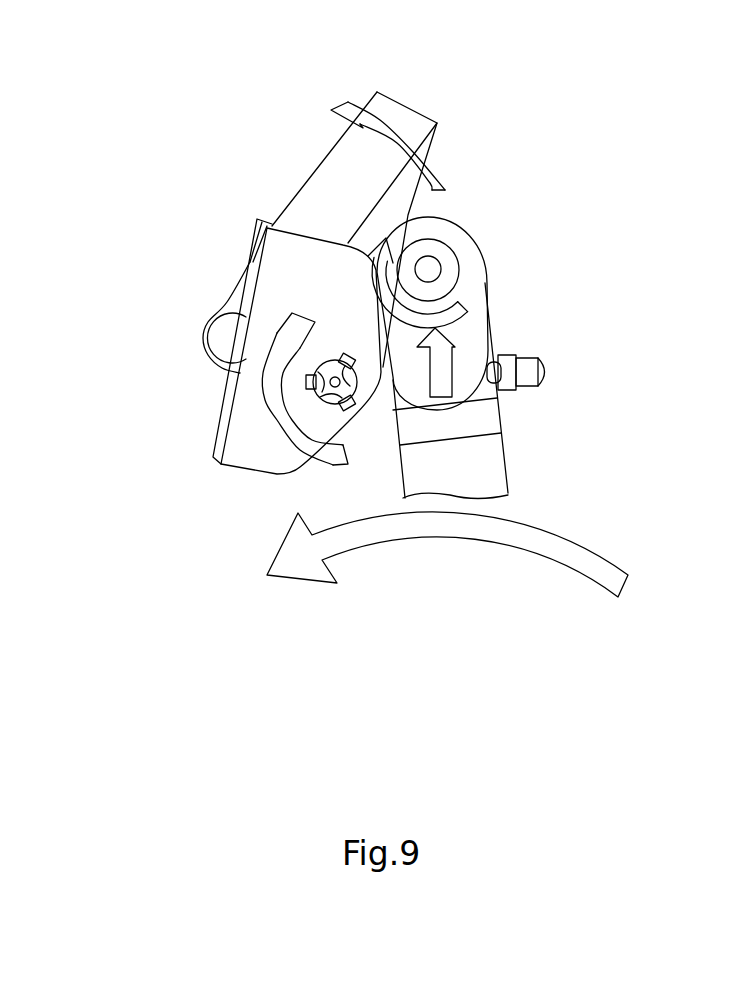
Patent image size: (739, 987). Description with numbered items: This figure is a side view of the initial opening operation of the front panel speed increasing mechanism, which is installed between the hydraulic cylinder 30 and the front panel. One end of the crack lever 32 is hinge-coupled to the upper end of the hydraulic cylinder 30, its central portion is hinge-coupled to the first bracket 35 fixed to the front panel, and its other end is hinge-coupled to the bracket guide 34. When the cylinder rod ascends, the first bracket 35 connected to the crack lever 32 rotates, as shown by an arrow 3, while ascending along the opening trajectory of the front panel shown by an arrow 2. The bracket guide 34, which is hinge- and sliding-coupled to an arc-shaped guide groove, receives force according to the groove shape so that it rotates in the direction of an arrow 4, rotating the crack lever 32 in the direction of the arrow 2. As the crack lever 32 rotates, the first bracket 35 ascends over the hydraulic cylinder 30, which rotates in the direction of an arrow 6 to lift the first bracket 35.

The arrow 2 is at (322, 378).
The arrow 3 is at (313, 389).
The arrow 4 is at (388, 158).
The arrow 6 is at (455, 559).
The hydraulic cylinder 30 is at (497, 470).
The crack lever 32 is at (403, 322).
The bracket guide 34 is at (325, 185).
The first bracket 35 is at (252, 455).